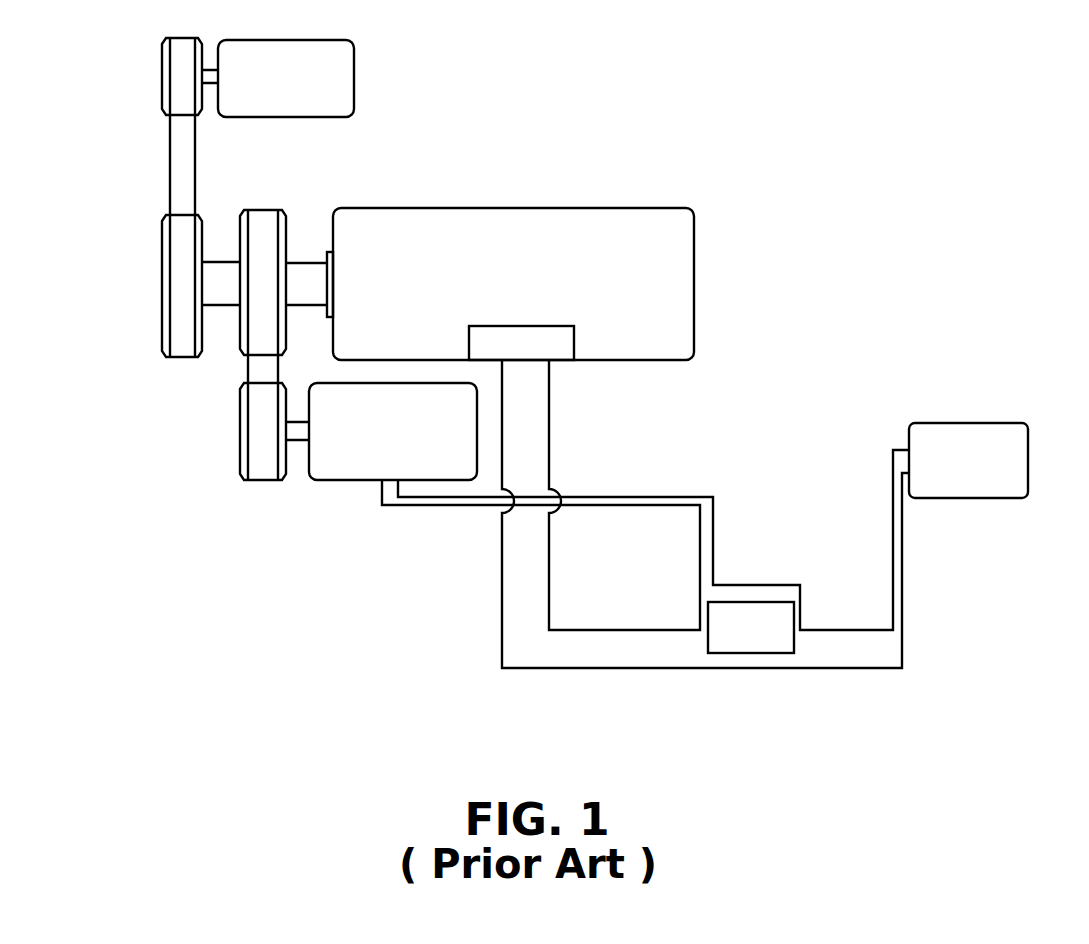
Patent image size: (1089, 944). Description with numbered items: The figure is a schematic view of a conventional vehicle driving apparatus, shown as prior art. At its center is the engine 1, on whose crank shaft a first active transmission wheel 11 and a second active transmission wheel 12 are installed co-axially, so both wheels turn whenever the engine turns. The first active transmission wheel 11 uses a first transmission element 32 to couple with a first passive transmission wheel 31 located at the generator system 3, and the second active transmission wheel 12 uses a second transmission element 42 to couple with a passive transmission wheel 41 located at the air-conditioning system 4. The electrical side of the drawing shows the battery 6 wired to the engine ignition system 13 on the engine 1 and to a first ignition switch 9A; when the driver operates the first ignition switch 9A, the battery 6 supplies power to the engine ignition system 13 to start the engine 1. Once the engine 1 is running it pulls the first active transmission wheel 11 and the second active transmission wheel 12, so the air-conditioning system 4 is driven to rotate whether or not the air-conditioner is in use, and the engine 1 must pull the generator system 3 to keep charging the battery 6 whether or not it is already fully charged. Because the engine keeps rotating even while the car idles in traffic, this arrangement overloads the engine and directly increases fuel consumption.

The engine 1 is at (667, 267).
The first active transmission wheel 11 is at (282, 233).
The second active transmission wheel 12 is at (165, 285).
The engine ignition system 13 is at (562, 342).
The generator system 3 is at (362, 463).
The first passive transmission wheel 31 is at (244, 440).
The first transmission element 32 is at (260, 375).
The air-conditioning system 4 is at (333, 74).
The passive transmission wheel 41 is at (166, 80).
The second transmission element 42 is at (178, 168).
The battery 6 is at (764, 615).
The first ignition switch 9A is at (981, 452).